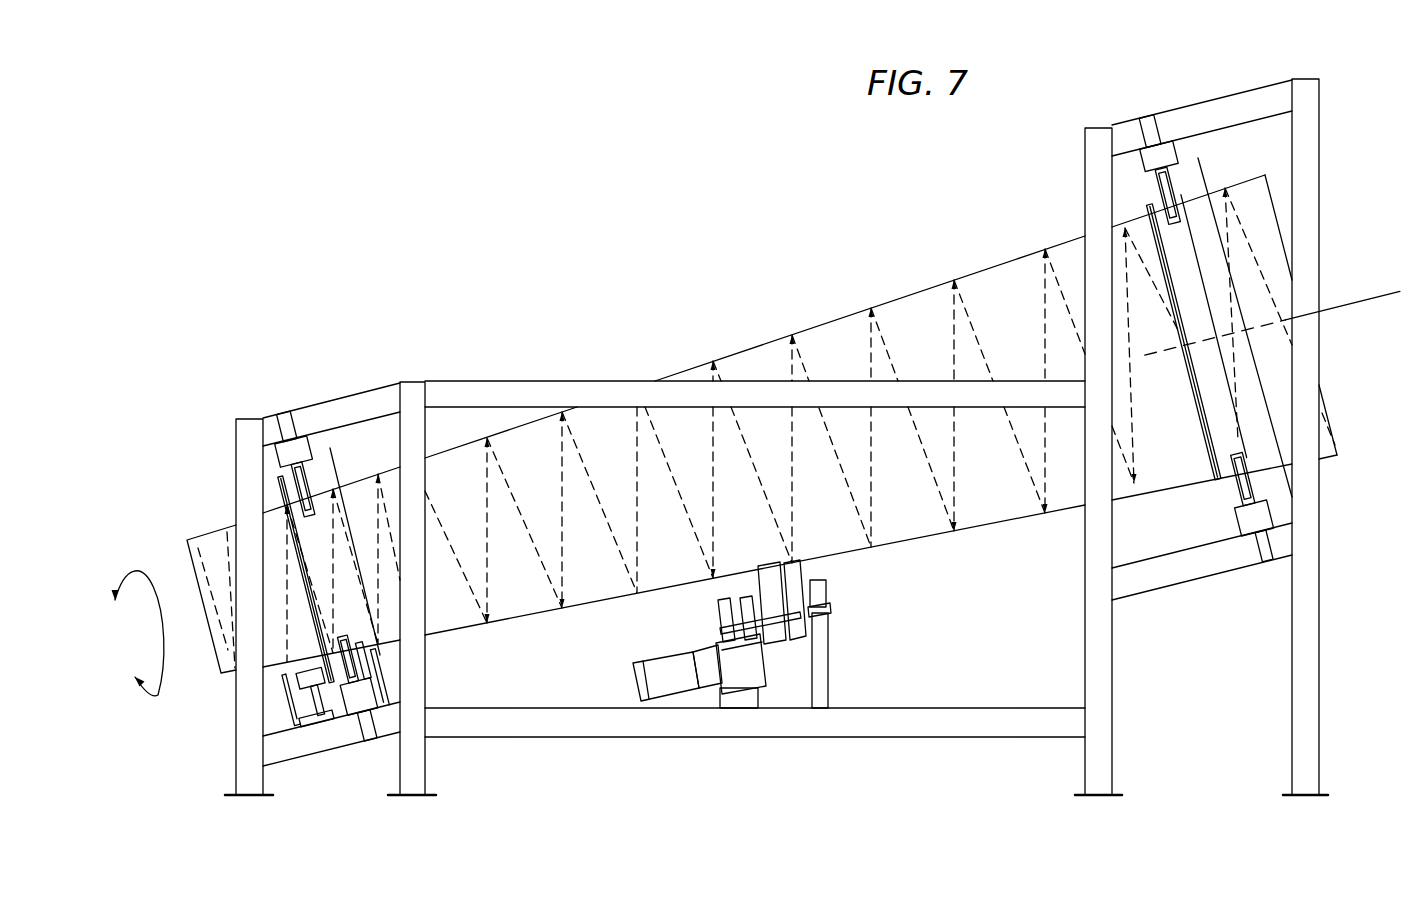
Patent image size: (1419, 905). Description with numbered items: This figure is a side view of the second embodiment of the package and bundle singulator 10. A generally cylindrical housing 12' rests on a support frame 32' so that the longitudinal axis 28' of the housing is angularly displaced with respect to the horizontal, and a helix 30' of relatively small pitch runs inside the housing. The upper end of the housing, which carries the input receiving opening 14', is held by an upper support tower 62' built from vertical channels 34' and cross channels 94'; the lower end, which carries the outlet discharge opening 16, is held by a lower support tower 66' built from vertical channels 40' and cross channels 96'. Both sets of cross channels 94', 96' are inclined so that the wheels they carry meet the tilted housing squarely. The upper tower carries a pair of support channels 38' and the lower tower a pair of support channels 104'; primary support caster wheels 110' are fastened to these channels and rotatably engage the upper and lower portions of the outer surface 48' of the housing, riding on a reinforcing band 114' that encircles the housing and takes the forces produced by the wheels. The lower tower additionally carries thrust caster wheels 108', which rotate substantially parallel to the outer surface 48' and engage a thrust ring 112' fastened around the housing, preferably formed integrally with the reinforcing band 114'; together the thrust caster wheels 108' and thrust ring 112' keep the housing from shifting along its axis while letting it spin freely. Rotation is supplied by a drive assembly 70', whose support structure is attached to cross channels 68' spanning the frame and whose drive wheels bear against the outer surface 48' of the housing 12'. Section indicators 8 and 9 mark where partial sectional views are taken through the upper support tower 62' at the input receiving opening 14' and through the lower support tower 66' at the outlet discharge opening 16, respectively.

The singulator 10 is at (1025, 152).
The housing 12' is at (800, 421).
The input receiving opening 14' is at (1276, 326).
The outlet discharge opening 16 is at (208, 620).
The longitudinal axis 28' is at (1273, 299).
The helix 30' is at (810, 425).
The support frame 32' is at (817, 758).
The vertical channels 34' is at (1201, 437).
The support channels 38' is at (1206, 337).
The vertical channels 40' is at (330, 588).
The outer surface 48' is at (764, 344).
The upper support tower 62' is at (1208, 420).
The lower support tower 66' is at (330, 551).
The cross channels 68' is at (755, 554).
The drive assembly 70' is at (786, 634).
The cross channels 94' is at (1202, 338).
The cross channels 96' is at (312, 596).
The support channels 104' is at (379, 553).
The thrust caster wheels 108' is at (328, 671).
The primary support caster wheels 110' is at (774, 428).
The thrust ring 112' is at (254, 579).
The reinforcing band 114' is at (773, 425).
The section line 8- 8 is at (1204, 161).
The section line 9- 9 is at (345, 455).